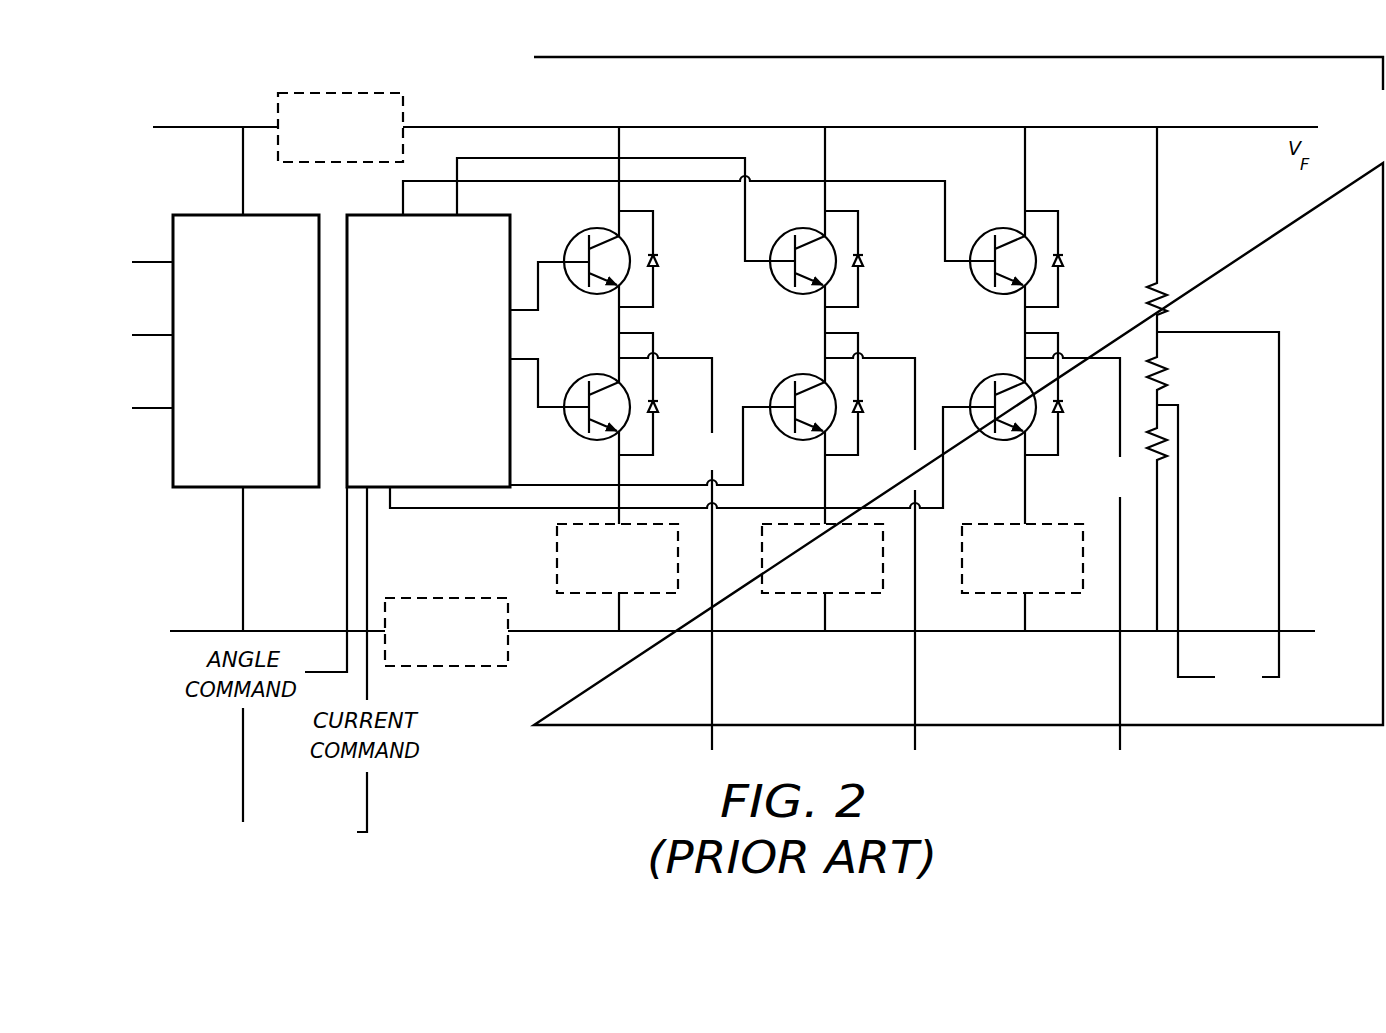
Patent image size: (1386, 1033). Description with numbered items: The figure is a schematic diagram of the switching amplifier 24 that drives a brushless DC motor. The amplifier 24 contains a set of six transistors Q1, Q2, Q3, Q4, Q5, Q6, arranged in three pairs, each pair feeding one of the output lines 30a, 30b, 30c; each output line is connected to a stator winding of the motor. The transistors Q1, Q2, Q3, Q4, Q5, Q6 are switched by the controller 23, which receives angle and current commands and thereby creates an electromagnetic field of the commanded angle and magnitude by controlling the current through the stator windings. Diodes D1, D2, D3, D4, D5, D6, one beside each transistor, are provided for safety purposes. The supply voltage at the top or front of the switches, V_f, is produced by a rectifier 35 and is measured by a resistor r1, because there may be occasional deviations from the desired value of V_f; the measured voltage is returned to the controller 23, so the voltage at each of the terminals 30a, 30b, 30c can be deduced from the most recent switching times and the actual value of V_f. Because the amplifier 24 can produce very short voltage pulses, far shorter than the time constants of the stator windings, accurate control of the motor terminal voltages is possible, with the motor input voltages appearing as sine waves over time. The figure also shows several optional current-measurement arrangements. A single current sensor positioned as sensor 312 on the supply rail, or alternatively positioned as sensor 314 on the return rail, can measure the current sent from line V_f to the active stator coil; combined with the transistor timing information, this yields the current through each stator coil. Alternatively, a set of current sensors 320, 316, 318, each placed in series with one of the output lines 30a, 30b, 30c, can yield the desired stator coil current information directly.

The rectifier 35 is at (198, 214).
The controller 23 is at (372, 214).
The amplifier 24 is at (534, 106).
The current sensor 312 is at (375, 93).
The current sensor 314 is at (427, 598).
The current sensor 316 is at (838, 594).
The current sensor 318 is at (1038, 594).
The current sensor 320 is at (634, 594).
The output line 30a is at (730, 464).
The output line 30b is at (937, 484).
The output line 30c is at (1142, 487).
The transistor Q1 is at (591, 229).
The transistor Q2 is at (591, 375).
The transistor Q3 is at (796, 229).
The transistor Q4 is at (796, 375).
The transistor Q5 is at (996, 229).
The transistor Q6 is at (996, 375).
The diode D1 is at (661, 258).
The diode D2 is at (661, 407).
The diode D3 is at (866, 258).
The diode D4 is at (866, 407).
The diode D5 is at (1066, 258).
The diode D6 is at (1066, 407).
The resistor r1 is at (1213, 408).